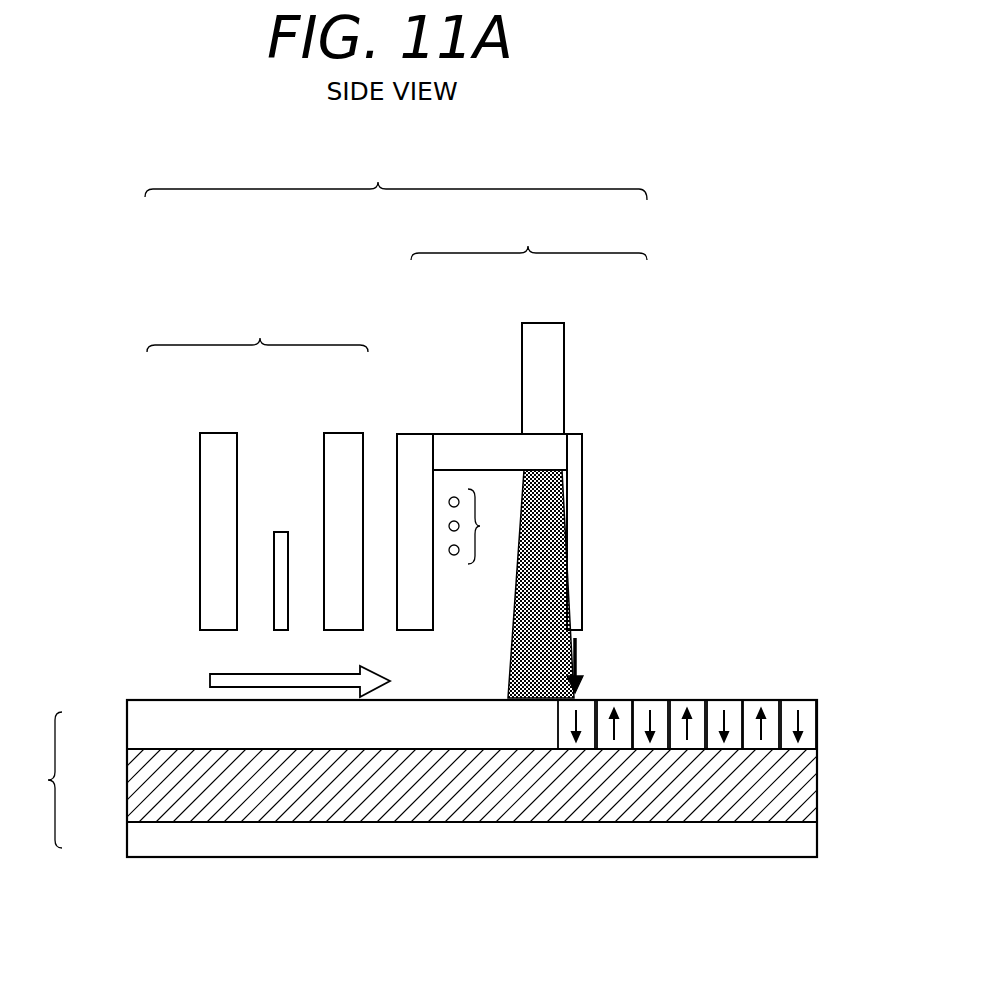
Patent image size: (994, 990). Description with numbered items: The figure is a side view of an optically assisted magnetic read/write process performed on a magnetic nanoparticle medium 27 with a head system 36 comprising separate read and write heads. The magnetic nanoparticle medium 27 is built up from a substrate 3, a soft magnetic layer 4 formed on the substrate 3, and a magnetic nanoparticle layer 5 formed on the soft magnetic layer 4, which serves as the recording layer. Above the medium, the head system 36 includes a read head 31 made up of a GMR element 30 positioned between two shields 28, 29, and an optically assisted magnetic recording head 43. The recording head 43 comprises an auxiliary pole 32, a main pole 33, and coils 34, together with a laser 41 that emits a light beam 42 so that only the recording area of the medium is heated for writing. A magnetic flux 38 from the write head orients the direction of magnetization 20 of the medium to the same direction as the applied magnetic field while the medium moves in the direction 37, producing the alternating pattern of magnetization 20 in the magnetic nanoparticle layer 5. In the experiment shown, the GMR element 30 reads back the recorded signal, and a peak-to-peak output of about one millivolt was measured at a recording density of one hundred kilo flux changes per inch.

The substrate 3 is at (147, 837).
The soft magnetic layer 4 is at (142, 783).
The magnetic nanoparticle layer 5 is at (148, 730).
The magnetization 20 is at (807, 712).
The magnetic nanoparticle medium 27 is at (445, 778).
The shield 28 is at (217, 442).
The shield 29 is at (345, 443).
The GMR element 30 is at (280, 538).
The read head 31 is at (257, 332).
The auxiliary pole 32 is at (415, 448).
The main pole 33 is at (575, 452).
The coils 34 is at (480, 526).
The head system 36 is at (396, 174).
The direction of medium movement 37 is at (378, 672).
The magnetic flux 38 is at (575, 652).
The laser 41 is at (542, 328).
The light beam 42 is at (553, 588).
The optically assisted magnetic recording head 43 is at (524, 424).